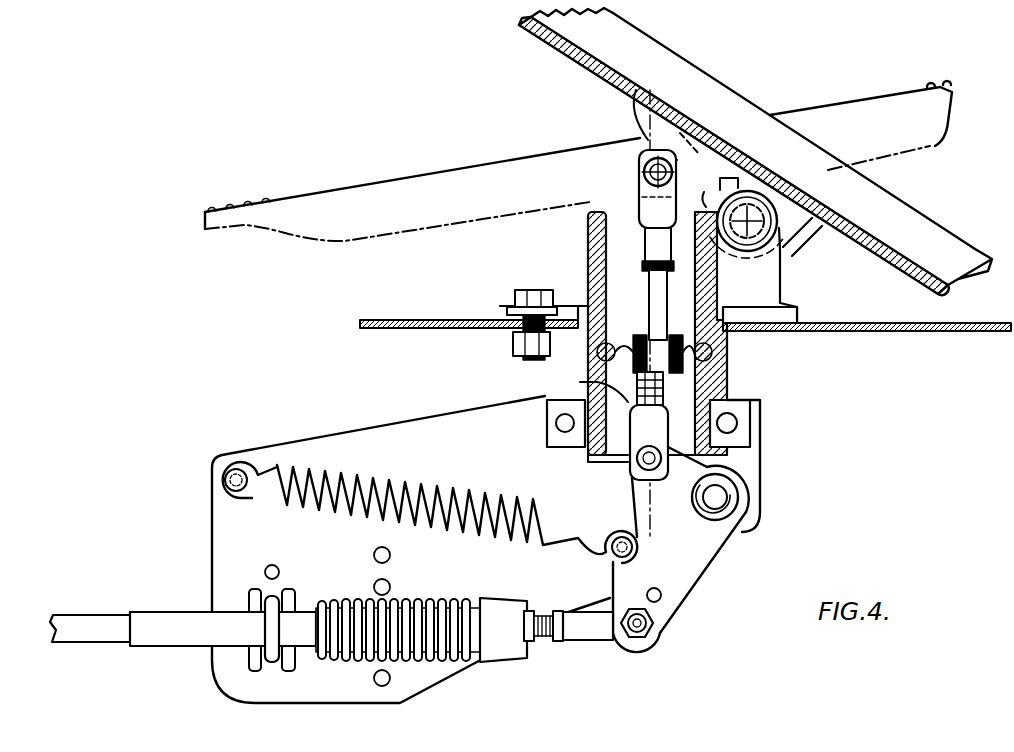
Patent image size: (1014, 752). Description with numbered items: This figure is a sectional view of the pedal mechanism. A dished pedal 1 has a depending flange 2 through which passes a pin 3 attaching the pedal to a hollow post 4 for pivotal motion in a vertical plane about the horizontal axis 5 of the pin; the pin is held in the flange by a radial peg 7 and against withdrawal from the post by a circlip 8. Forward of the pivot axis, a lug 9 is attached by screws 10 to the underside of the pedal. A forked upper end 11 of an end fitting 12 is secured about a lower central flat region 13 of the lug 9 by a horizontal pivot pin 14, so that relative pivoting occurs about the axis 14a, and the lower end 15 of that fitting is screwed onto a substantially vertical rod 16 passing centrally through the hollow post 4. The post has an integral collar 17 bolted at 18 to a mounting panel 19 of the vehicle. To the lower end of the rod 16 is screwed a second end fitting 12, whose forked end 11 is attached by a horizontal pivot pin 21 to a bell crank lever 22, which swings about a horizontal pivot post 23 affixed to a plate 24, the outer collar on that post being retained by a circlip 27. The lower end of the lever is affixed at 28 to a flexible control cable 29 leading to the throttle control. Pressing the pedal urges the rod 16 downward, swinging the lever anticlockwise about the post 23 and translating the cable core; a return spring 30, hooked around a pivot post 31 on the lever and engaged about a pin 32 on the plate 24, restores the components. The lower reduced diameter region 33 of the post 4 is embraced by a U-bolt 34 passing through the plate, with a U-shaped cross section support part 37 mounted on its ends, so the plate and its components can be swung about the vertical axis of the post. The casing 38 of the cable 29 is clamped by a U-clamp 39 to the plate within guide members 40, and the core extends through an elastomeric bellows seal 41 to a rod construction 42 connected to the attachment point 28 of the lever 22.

The pedal 1 is at (688, 72).
The depending flange 2 is at (781, 264).
The pin 3 is at (765, 196).
The hollow post 4 is at (588, 249).
The horizontal longitudinal axis 5 is at (746, 240).
The radial peg 7 is at (800, 255).
The circlip 8 is at (755, 197).
The lug 9 is at (646, 103).
The screws 10 is at (684, 138).
The forked upper end 11 is at (640, 199).
The end fitting 12 is at (640, 181).
The lower central flat region 13 is at (648, 143).
The horizontal pivot pin 14 is at (643, 166).
The axis 14a is at (708, 150).
The lower end 15 is at (645, 244).
The vertical rod 16 is at (648, 293).
The collar 17 is at (500, 318).
The bolt 18 is at (517, 296).
The mounting panel 19 is at (404, 322).
The horizontal pivot pin 21 is at (632, 487).
The bell crank lever 22 is at (697, 563).
The horizontal pivot post 23 is at (730, 507).
The plate 24 is at (750, 464).
The circlip 27 is at (742, 530).
The point of attachment 28 is at (656, 624).
The flexible control cable 29 is at (113, 652).
The return spring 30 is at (589, 228).
The pivot post 31 is at (610, 562).
The pin 32 is at (238, 494).
The reduced diameter region 33 is at (740, 423).
The U-bolt 34 is at (547, 425).
The U-shaped cross section support part 37 is at (584, 452).
The casing 38 is at (180, 648).
The U-clamp 39 is at (265, 630).
The guide members 40 is at (254, 590).
The elastomeric bellows seal 41 is at (455, 662).
The rod construction 42 is at (584, 642).